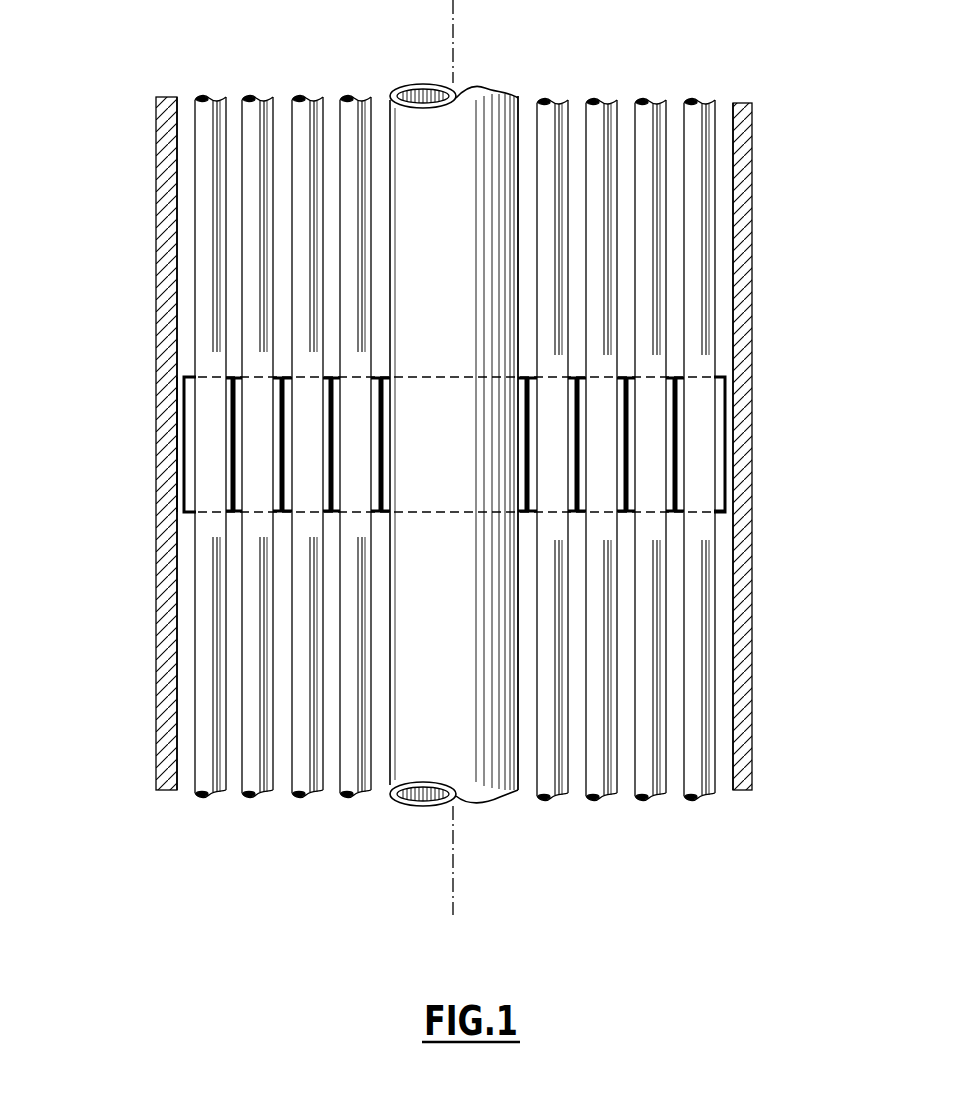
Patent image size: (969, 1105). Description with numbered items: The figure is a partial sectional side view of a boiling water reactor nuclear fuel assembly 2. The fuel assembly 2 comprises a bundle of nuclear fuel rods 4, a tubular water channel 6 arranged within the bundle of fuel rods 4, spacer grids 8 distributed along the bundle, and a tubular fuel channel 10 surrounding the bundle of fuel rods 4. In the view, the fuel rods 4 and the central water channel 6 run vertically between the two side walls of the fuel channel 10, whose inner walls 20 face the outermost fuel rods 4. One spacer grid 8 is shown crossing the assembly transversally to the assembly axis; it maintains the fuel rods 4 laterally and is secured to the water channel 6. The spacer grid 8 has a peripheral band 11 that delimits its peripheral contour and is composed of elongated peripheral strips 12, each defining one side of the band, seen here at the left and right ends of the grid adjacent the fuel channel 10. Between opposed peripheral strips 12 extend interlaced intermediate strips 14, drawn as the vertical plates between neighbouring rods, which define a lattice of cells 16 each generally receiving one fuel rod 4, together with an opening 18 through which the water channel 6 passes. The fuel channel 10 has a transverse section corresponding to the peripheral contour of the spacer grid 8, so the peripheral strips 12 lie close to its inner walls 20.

The fuel assembly 2 is at (176, 64).
The nuclear fuel rods 4 is at (352, 95).
The tubular water channel 6 is at (478, 97).
The spacer grid 8 is at (168, 367).
The tubular fuel channel 10 is at (146, 184).
The peripheral band 11 is at (170, 503).
The peripheral strips 12 is at (183, 417).
The intermediate strips 14 is at (283, 483).
The cells 16 is at (626, 513).
The opening 18 is at (524, 514).
The inner walls 20 is at (175, 217).